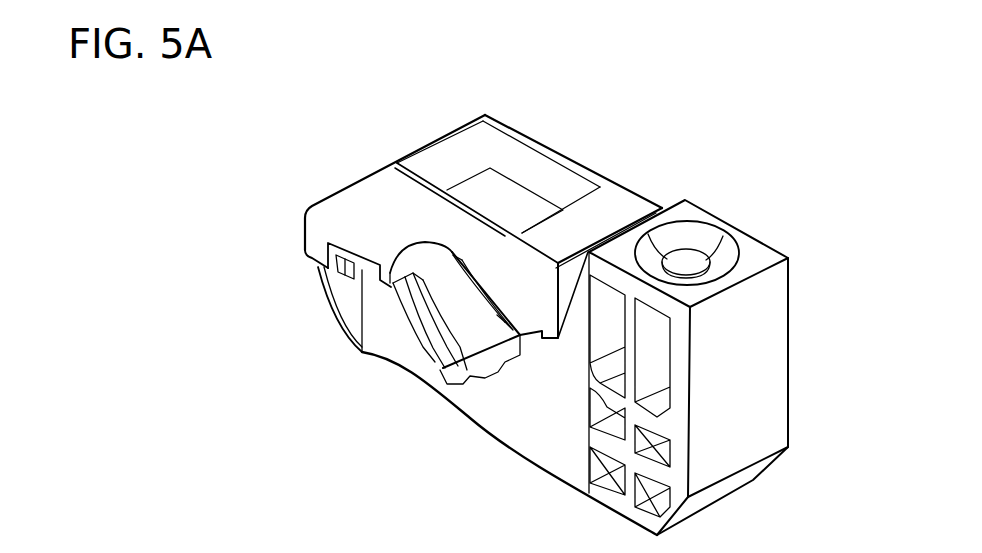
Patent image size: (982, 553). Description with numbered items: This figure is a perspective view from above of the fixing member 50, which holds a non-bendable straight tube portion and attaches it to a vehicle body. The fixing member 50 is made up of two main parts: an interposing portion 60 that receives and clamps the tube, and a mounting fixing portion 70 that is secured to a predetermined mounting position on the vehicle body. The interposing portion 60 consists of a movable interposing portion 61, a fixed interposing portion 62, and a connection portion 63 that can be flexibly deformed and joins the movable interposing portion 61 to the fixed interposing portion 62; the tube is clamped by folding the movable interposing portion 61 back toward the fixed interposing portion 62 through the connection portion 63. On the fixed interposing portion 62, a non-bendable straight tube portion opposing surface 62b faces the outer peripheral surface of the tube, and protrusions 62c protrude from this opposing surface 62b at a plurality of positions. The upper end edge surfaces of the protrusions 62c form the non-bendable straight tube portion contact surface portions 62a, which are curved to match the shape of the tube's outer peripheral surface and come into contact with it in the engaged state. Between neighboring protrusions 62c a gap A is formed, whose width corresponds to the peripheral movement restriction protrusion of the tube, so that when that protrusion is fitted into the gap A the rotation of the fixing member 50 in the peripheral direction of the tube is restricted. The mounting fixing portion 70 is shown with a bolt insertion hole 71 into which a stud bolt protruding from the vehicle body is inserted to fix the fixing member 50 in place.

The fixing member 50 is at (778, 168).
The interposing portion 60 is at (455, 104).
The movable interposing portion 61 is at (358, 172).
The fixed interposing portion 62 is at (397, 433).
The non-bendable straight tube portion contact surface portion 62a is at (422, 350).
The non-bendable straight tube portion opposing surface 62b is at (452, 297).
The protrusion 62c is at (417, 353).
The connection portion 63 is at (316, 289).
The mounting fixing portion 70 is at (763, 400).
The bolt insertion hole 71 is at (688, 257).
The gap A is at (460, 373).